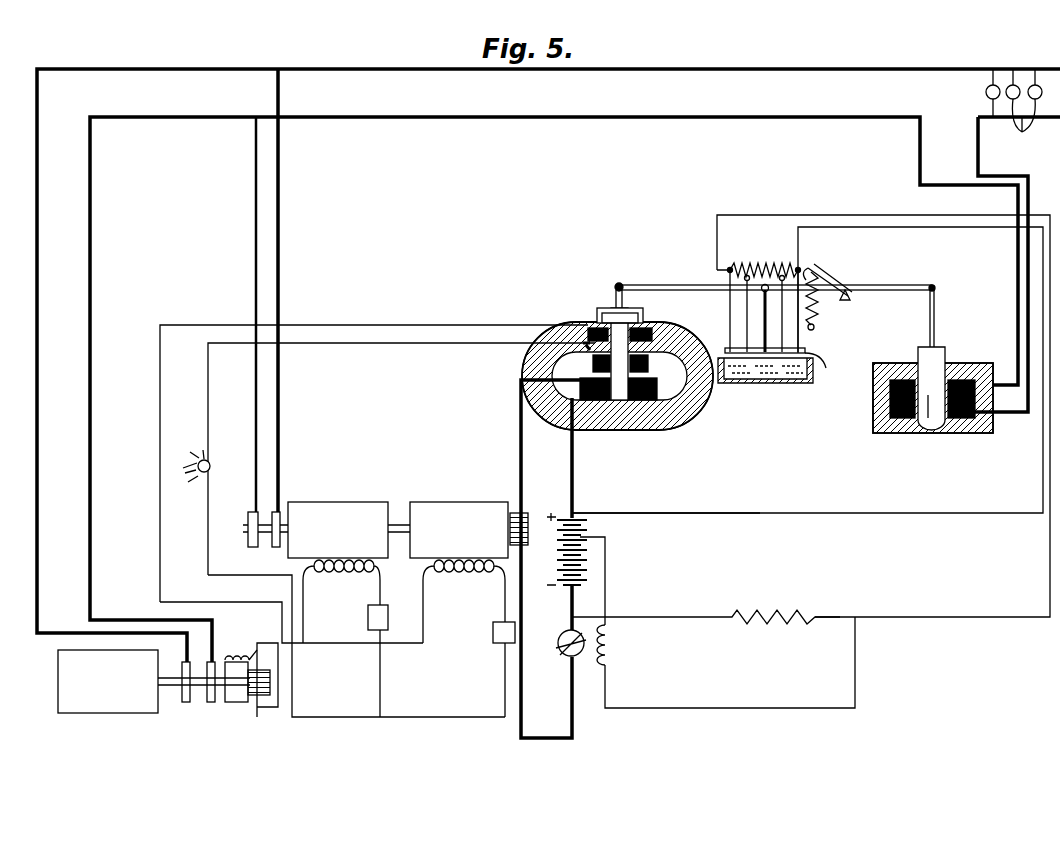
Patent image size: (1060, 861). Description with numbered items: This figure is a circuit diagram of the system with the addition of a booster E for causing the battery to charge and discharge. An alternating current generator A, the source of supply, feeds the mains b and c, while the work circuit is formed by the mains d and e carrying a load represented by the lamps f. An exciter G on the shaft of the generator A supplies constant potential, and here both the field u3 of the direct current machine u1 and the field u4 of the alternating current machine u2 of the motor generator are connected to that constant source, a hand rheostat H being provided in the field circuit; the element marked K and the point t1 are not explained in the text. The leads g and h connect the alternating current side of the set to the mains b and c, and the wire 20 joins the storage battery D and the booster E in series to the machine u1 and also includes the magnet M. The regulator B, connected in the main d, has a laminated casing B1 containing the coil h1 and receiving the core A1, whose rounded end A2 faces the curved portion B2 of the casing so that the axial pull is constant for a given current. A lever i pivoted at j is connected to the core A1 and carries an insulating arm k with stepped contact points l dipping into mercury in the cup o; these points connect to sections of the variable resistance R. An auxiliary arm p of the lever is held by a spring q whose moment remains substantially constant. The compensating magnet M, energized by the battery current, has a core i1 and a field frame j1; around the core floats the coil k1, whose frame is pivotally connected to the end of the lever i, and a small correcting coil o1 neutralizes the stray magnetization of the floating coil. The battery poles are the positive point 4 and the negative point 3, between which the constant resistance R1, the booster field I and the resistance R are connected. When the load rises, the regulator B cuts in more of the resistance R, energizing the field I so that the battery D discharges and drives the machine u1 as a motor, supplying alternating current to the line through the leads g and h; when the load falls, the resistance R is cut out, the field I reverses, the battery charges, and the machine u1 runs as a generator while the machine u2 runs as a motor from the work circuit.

The main c is at (184, 70).
The main b is at (225, 117).
The lead g is at (256, 204).
The lead h is at (278, 224).
The main e is at (1016, 66).
The main d is at (1016, 255).
The lamps f is at (1023, 125).
The positive pole 4 is at (590, 516).
The negative pole 3 is at (580, 588).
The constant resistance R1 is at (706, 604).
The booster field I is at (618, 648).
The wire 20 is at (522, 384).
The storage battery D is at (574, 549).
The booster E is at (558, 647).
The alternating current generator A is at (108, 681).
The exciter G is at (236, 705).
The lamp K is at (189, 477).
The alternating current machine u2 is at (315, 530).
The direct current machine u1 is at (458, 530).
The field of alternating current machine u4 is at (341, 601).
The field of direct current machine u3 is at (464, 638).
The hand rheostat H is at (388, 616).
The regulator B is at (618, 379).
The magnet M is at (598, 427).
The field frame j1 is at (664, 428).
The core i1 is at (620, 392).
The floating coil k1 is at (590, 340).
The correcting coil o1 is at (590, 355).
The pivot t1 is at (598, 305).
The lever i is at (876, 288).
The variable resistance R is at (759, 267).
The mercury cup o is at (760, 372).
The contact points l is at (782, 365).
The insulating arm k is at (823, 373).
The spring q is at (816, 308).
The auxiliary arm p is at (832, 280).
The pivot j is at (852, 298).
The laminated iron casing B1 is at (985, 428).
The magnet coil h1 is at (878, 422).
The curved portion of casing B2 is at (962, 428).
The core A1 is at (935, 362).
The rounded end of core A2 is at (932, 420).